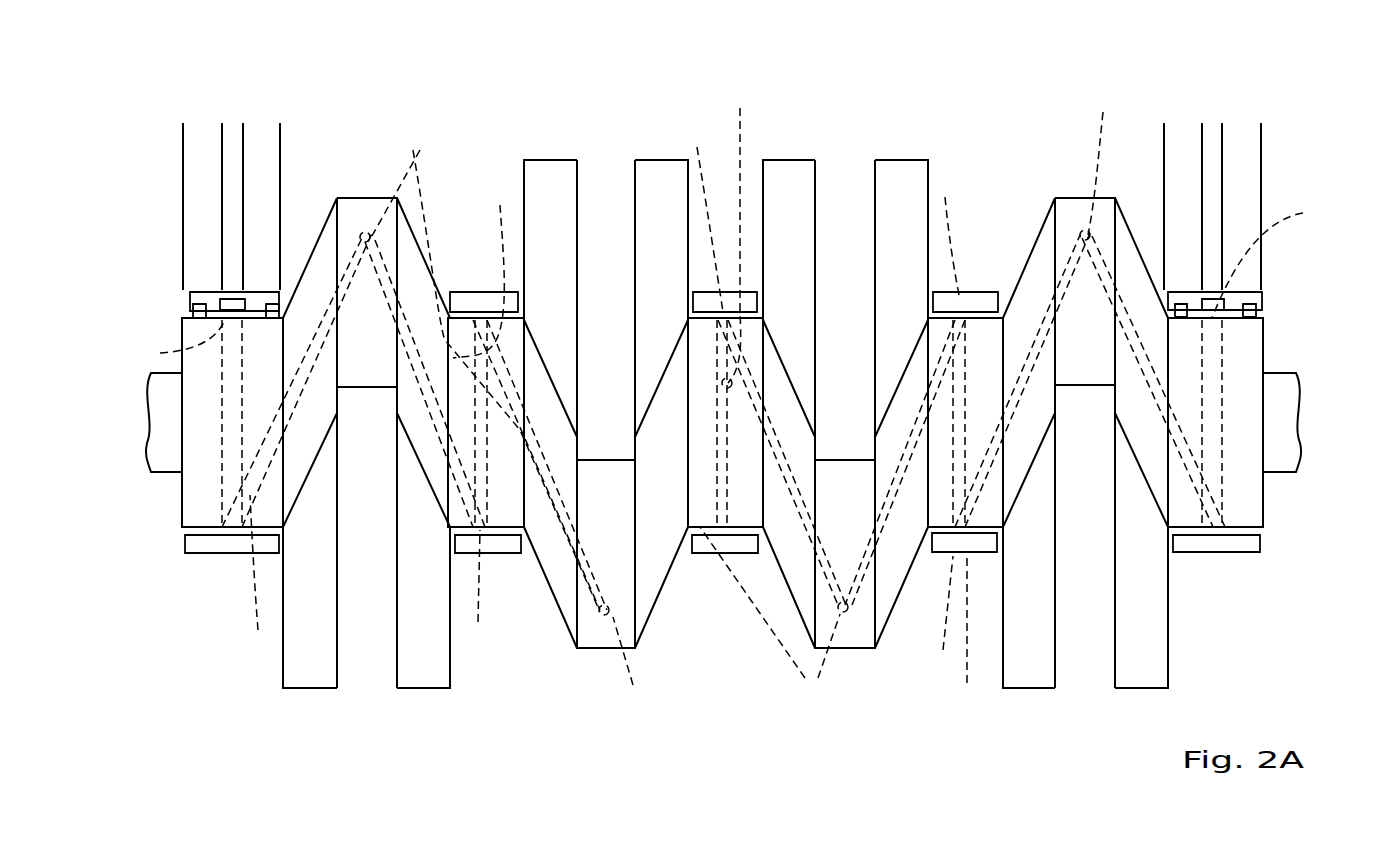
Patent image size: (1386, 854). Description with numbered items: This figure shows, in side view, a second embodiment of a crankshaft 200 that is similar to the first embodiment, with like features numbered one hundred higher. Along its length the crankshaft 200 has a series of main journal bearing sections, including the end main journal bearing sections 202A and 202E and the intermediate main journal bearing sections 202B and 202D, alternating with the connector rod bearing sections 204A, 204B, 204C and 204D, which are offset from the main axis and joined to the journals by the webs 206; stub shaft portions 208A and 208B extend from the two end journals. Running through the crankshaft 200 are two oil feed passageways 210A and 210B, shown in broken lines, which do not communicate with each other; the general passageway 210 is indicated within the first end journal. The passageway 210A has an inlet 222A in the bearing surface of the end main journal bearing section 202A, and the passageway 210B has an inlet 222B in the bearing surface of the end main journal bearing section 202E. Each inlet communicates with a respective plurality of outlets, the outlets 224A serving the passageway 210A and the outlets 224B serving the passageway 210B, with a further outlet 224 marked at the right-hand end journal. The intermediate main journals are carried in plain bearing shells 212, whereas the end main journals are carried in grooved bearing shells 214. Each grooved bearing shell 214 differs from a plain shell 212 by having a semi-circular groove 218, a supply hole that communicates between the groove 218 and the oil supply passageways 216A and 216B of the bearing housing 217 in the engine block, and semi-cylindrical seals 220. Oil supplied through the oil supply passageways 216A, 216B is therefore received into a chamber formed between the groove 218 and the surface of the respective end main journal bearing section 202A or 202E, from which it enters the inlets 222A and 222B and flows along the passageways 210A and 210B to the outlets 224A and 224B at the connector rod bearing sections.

The crankshaft 200 is at (426, 103).
The end main journal bearing section 202A is at (193, 512).
The main journal bearing section 202B is at (505, 513).
The main journal bearing section 202D is at (965, 422).
The end main journal bearing section 202E is at (1253, 494).
The connector rod bearing section 204A is at (355, 208).
The connector rod bearing section 204B is at (597, 633).
The connector rod bearing section 204C is at (832, 468).
The connector rod bearing section 204D is at (1072, 202).
The crank web / counterweight 206 is at (652, 167).
The end shaft portion 208A is at (162, 473).
The end shaft portion 208B is at (1288, 390).
The oil passage 210 is at (243, 408).
The oil feed passageway 210A is at (367, 422).
The oil feed passageway 210B is at (919, 394).
The plain bearing shell 212 is at (462, 300).
The grooved bearing shell 214 is at (253, 300).
The oil supply passageway 216A is at (227, 153).
The oil supply passageway 216B is at (1213, 162).
The bearing housing 217 is at (198, 190).
The semi-circular groove 218 is at (233, 301).
The semi-cylindrical seal 220 is at (193, 312).
The inlet 222A is at (158, 343).
The inlet 222B is at (1294, 256).
The oil passage 224 is at (1212, 530).
The outlet 224A is at (208, 594).
The outlet 224B is at (880, 415).